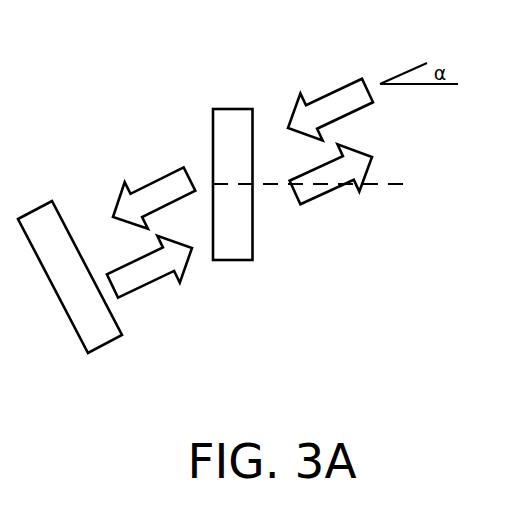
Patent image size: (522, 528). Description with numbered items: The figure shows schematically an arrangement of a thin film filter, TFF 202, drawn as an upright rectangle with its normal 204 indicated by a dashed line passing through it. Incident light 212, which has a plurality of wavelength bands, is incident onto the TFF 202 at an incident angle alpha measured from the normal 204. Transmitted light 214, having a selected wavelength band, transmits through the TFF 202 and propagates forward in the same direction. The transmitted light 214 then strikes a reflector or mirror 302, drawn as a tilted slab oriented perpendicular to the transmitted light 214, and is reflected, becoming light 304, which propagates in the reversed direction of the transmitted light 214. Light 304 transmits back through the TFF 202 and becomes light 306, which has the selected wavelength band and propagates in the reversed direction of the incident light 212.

The TFF 202 is at (237, 108).
The normal 204 is at (387, 184).
The incident light 212 is at (353, 82).
The transmitted light 214 is at (168, 175).
The reflector or mirror 302 is at (59, 212).
The light 304 is at (145, 284).
The light 306 is at (323, 195).